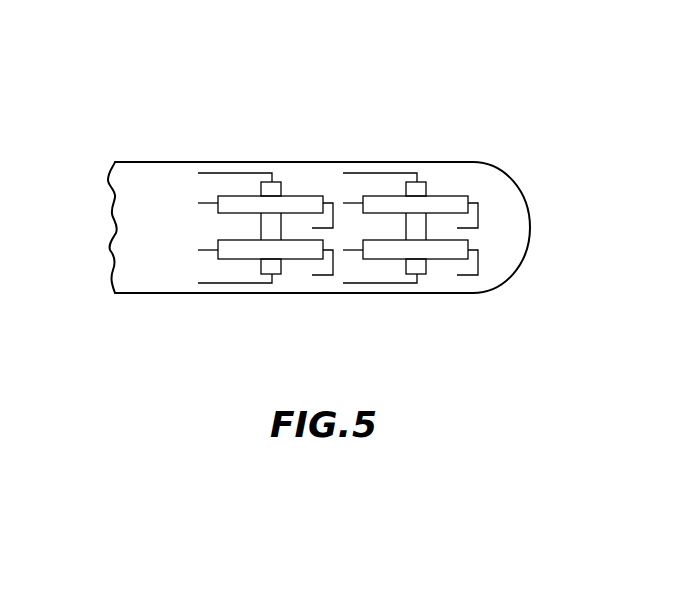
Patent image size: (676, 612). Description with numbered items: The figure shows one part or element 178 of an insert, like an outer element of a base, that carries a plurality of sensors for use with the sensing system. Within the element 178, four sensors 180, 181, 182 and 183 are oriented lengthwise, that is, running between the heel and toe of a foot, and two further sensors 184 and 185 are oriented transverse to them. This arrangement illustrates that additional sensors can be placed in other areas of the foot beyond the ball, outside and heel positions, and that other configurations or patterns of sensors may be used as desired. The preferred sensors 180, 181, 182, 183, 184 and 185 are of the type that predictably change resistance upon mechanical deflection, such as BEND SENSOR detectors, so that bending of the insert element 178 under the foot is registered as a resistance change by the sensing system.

The part or element of an insert 178 is at (513, 229).
The sensor 180 is at (443, 256).
The sensor 181 is at (296, 253).
The sensor 182 is at (296, 203).
The sensor 183 is at (447, 203).
The sensor 184 is at (276, 187).
The sensor 185 is at (422, 188).